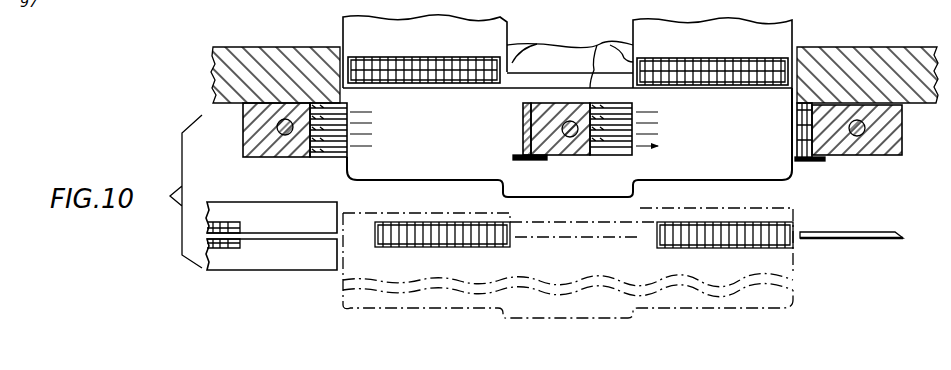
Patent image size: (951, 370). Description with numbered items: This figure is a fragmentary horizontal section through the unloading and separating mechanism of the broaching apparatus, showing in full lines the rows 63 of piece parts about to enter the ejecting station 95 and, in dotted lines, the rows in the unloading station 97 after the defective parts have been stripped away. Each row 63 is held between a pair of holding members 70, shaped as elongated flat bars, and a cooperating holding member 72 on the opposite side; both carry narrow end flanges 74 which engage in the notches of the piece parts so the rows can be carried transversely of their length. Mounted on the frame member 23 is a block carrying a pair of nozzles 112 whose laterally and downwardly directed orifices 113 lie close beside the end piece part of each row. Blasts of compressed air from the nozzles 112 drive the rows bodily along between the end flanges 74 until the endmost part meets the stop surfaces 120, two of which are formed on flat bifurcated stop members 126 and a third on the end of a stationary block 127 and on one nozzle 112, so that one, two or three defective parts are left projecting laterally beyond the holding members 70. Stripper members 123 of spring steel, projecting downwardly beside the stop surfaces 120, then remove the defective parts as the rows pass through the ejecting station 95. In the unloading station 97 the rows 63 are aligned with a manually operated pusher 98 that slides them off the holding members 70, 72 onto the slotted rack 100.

The frame member 23 is at (214, 72).
The holding members 70 is at (492, 30).
The row of piece parts 63 is at (430, 56).
The end flanges 74 is at (572, 57).
The nozzles 112 is at (268, 140).
The orifices 113 is at (328, 142).
The bifurcated stop members 126 is at (526, 106).
The stop surfaces 120 is at (522, 113).
The stationary block 127 is at (858, 145).
The holding member 72 is at (438, 176).
The stripper members 123 is at (516, 160).
The ejecting station 95 is at (783, 192).
The rack 100 is at (303, 218).
The pusher 98 is at (858, 240).
The unloading station 97 is at (802, 280).